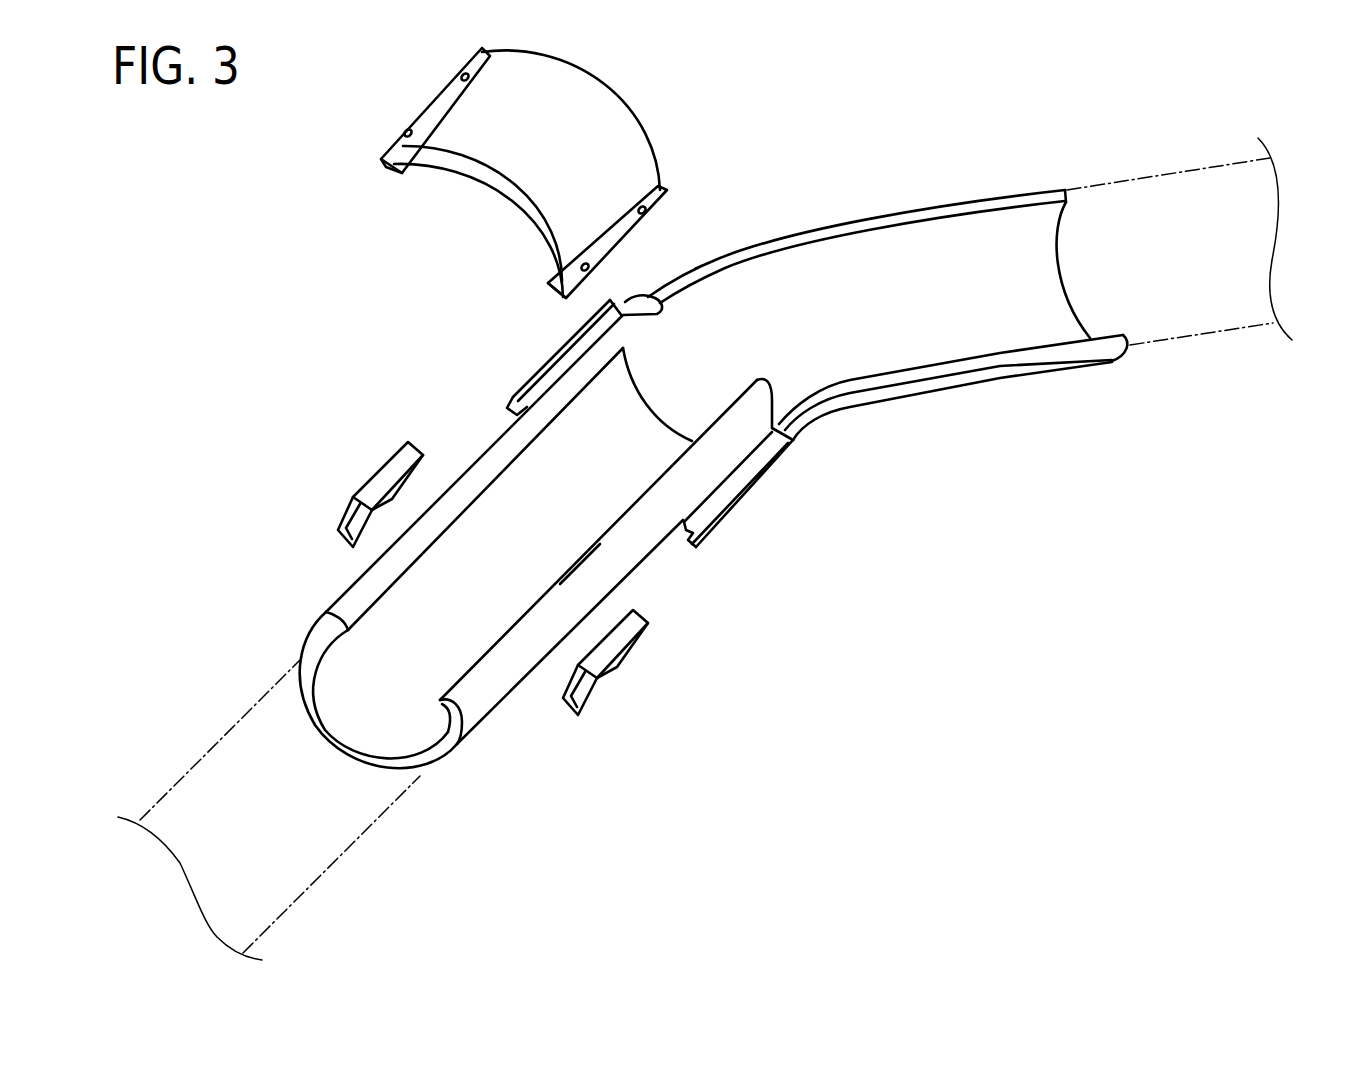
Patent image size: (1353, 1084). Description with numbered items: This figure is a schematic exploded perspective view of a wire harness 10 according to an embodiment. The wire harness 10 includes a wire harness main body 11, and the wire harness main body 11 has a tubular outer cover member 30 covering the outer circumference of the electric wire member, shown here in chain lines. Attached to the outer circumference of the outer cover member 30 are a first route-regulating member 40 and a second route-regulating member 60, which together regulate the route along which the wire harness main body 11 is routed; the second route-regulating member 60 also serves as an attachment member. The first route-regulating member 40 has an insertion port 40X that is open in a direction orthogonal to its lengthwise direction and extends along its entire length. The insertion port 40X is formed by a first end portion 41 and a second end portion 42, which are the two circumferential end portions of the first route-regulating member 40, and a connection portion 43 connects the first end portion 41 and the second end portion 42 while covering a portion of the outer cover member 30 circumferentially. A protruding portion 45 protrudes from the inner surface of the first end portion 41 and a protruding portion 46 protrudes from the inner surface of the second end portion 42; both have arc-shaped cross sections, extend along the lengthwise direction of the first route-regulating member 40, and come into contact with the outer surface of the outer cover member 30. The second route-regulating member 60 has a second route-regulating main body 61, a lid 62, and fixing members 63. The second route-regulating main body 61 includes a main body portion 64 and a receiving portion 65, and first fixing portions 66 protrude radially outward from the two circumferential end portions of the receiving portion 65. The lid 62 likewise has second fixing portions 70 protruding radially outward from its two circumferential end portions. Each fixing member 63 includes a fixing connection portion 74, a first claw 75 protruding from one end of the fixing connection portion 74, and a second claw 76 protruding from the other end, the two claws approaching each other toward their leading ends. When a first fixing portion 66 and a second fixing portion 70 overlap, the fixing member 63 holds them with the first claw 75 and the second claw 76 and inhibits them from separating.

The wire harness 10 is at (1198, 95).
The wire harness main body 11 is at (269, 810).
The outer cover member 30 is at (182, 777).
The first route-regulating member 40 is at (508, 720).
The insertion port 40X is at (592, 552).
The first end portion 41 is at (352, 617).
The second end portion 42 is at (462, 680).
The connection portion 43 is at (343, 750).
The protruding portion 45 is at (343, 630).
The protruding portion 46 is at (440, 707).
The second route-regulating member 60 is at (1039, 382).
The second route-regulating main body 61 is at (997, 202).
The lid 62 is at (628, 133).
The fixing member 63 is at (380, 470).
The main body portion 64 is at (917, 213).
The receiving portion 65 is at (683, 540).
The first fixing portion 66 is at (558, 350).
The second fixing portion 70 is at (428, 103).
The fixing connection portion 74 is at (620, 668).
The first claw 75 is at (563, 700).
The second claw 76 is at (576, 666).